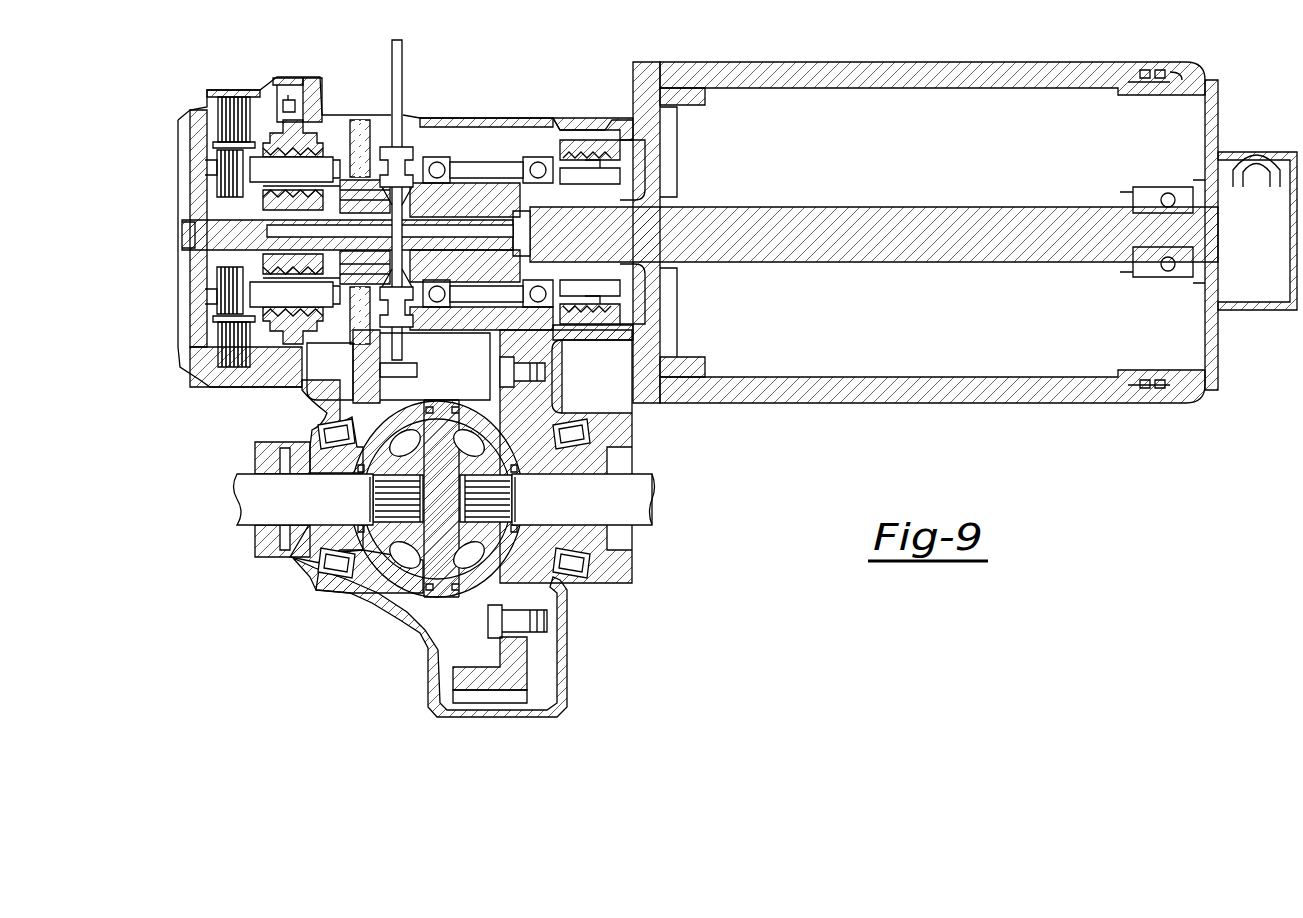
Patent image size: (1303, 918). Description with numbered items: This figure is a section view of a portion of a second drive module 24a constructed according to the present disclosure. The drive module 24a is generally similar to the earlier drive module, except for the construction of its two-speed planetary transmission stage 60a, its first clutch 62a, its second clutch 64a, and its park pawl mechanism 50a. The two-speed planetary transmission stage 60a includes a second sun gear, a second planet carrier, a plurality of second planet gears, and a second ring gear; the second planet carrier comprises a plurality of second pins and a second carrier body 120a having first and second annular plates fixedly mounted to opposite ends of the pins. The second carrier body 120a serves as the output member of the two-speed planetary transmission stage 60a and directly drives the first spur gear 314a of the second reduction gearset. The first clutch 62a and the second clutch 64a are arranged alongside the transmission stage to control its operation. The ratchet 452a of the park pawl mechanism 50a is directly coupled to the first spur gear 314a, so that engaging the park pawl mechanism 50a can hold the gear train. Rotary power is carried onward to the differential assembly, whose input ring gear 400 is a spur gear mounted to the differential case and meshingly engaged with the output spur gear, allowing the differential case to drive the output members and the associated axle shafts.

The second drive module 24a is at (746, 49).
The park pawl mechanism 50a is at (417, 70).
The two-speed planetary transmission stage 60a is at (328, 122).
The first clutch 62a is at (217, 167).
The second clutch 64a is at (204, 104).
The second carrier body 120a is at (350, 268).
The first spur gear 314a is at (490, 167).
The input ring gear 400 is at (507, 342).
The ratchet 452a is at (390, 305).